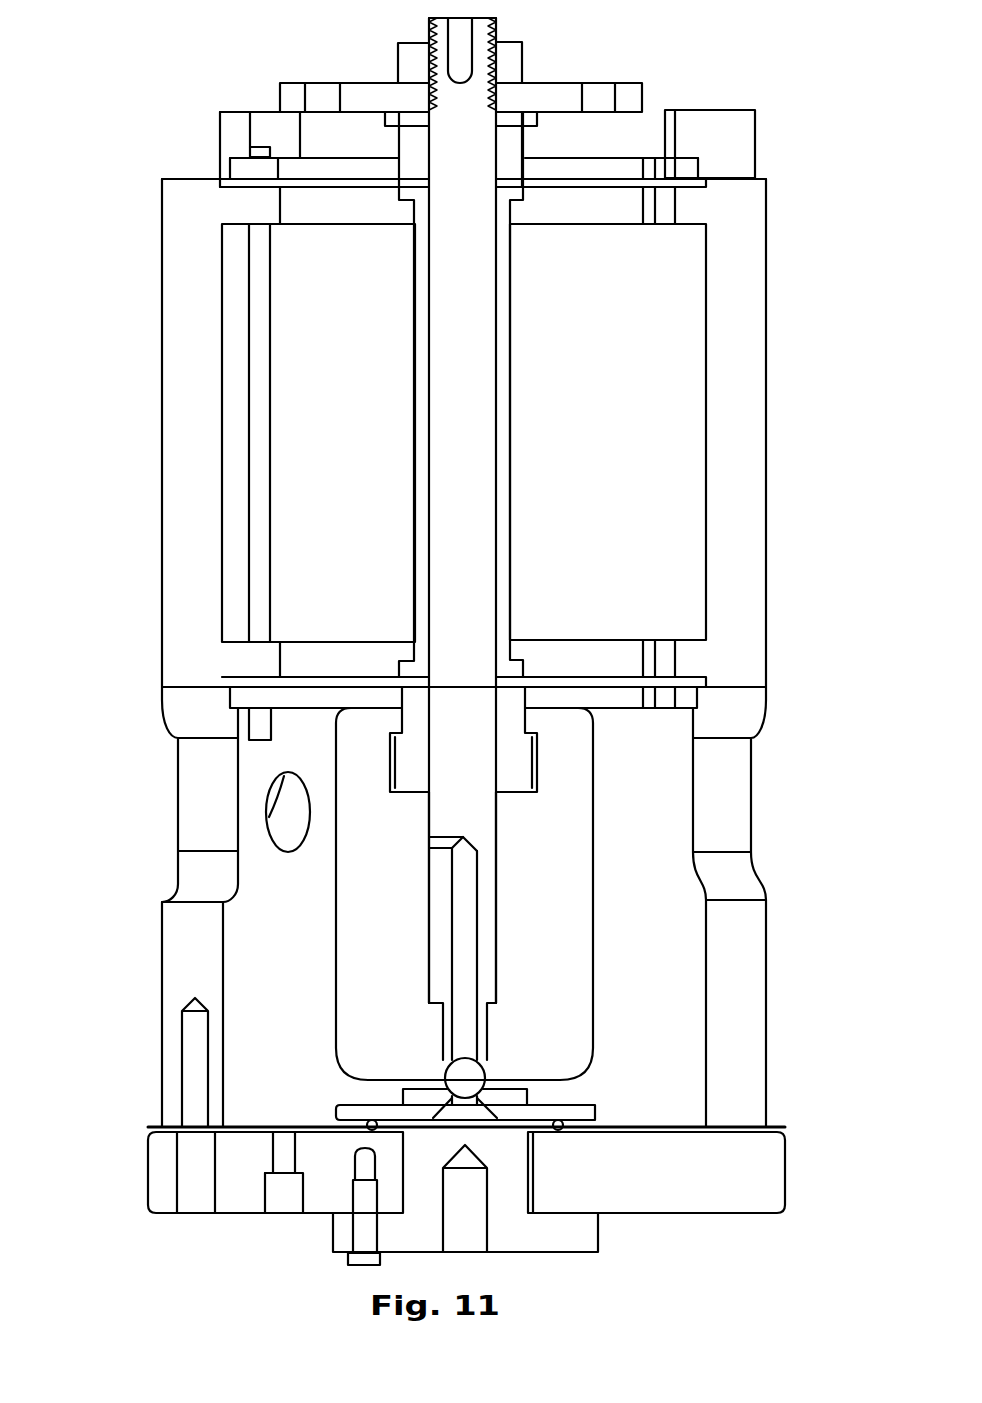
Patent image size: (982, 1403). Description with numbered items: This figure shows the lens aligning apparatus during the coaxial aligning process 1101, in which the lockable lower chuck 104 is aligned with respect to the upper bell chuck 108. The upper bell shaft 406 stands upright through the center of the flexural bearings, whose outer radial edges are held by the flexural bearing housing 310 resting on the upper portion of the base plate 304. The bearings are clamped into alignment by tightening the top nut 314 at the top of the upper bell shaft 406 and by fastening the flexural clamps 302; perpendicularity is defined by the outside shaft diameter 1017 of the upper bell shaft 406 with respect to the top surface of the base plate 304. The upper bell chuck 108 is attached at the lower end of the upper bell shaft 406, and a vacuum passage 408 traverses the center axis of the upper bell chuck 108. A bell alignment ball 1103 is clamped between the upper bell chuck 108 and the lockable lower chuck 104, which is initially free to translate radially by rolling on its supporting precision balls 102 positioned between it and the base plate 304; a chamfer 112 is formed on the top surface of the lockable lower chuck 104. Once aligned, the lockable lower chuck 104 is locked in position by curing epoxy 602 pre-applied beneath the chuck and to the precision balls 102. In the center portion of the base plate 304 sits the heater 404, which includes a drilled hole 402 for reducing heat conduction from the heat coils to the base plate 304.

The coaxial aligning process 1101 is at (183, 58).
The top nut 314 is at (510, 62).
The flexural clamps 302 is at (242, 172).
The outside shaft diameter 1017 is at (503, 307).
The upper bell shaft 406 is at (482, 369).
The flexural bearing housing 310 is at (190, 453).
The vacuum passage 408 is at (463, 897).
The upper bell chuck 108 is at (487, 937).
The bell alignment ball 1103 is at (465, 1073).
The lockable lower chuck 104 is at (507, 1100).
The chamfer 112 is at (445, 1117).
The curing epoxy 602 is at (437, 1119).
The supporting precision balls 102 is at (370, 1129).
The base plate 304 is at (258, 1162).
The drilled hole 402 is at (487, 1227).
The heater 404 is at (575, 1235).